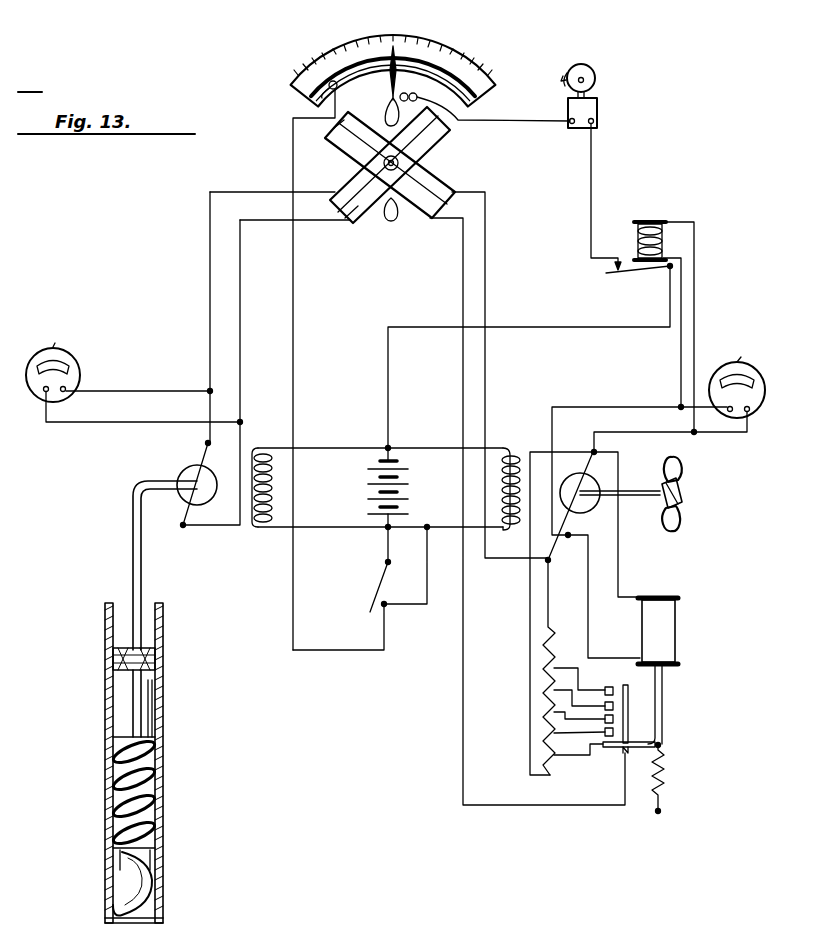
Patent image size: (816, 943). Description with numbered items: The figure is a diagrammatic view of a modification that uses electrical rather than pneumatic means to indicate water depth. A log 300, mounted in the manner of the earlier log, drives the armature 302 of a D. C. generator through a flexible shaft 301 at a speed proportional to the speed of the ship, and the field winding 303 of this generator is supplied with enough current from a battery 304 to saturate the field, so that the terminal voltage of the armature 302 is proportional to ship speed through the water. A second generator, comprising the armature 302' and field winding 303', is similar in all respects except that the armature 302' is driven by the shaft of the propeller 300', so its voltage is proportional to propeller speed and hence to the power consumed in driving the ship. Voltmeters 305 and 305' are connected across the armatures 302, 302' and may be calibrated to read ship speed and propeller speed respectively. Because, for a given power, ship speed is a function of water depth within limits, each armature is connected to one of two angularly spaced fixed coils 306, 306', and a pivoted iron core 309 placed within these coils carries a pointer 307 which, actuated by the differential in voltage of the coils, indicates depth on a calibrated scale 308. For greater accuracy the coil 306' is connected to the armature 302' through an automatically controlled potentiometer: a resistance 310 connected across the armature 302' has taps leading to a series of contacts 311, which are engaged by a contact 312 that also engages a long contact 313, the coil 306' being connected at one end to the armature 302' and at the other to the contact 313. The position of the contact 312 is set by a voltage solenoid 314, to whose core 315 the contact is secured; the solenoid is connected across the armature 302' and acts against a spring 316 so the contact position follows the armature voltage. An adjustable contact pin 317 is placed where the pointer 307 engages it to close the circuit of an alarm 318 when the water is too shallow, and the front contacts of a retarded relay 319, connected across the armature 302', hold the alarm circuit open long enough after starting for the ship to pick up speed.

The log 300 is at (157, 763).
The propeller 300' is at (698, 494).
The flexible shaft 301 is at (133, 547).
The armature 302 is at (183, 484).
The armature 302' is at (595, 613).
The field winding 303 is at (370, 502).
The field winding 303' is at (522, 478).
The battery 304 is at (378, 486).
The voltmeter 305 is at (133, 370).
The voltmeter 305' is at (658, 496).
The fixed coil 306 is at (377, 165).
The fixed coil 306' is at (412, 165).
The pointer 307 is at (399, 99).
The scale 308 is at (402, 68).
The pivoted iron core 309 is at (386, 222).
The resistance 310 is at (550, 643).
The contacts 311 is at (607, 687).
The contact 312 is at (636, 752).
The long contact 313 is at (623, 756).
The voltage solenoid 314 is at (679, 632).
The core 315 is at (664, 720).
The spring 316 is at (666, 785).
The adjustable contact pin 317 is at (300, 76).
The alarm 318 is at (598, 112).
The retarded relay 319 is at (660, 222).